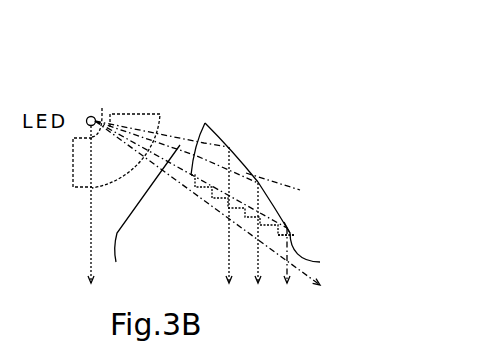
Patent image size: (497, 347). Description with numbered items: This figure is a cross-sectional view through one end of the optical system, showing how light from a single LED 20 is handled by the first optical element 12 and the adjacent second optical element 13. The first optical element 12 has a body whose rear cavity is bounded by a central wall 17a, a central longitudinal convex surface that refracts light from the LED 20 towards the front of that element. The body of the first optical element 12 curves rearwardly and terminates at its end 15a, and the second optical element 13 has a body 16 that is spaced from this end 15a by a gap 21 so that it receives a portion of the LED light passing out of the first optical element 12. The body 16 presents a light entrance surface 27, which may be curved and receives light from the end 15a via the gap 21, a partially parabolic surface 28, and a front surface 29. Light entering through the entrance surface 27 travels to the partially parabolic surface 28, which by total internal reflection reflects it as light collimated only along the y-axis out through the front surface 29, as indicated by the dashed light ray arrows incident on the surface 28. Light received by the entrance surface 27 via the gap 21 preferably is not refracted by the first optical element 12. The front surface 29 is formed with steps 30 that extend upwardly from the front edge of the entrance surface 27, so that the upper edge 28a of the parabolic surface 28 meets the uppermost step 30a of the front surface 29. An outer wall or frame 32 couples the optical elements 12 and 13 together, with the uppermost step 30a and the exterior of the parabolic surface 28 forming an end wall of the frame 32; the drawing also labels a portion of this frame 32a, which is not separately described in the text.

The first optical element 12 is at (83, 165).
The LED 20 is at (92, 116).
The central wall 17a is at (102, 108).
The end of body 15a is at (162, 114).
The gap 21 is at (145, 213).
The second optical element 13 is at (281, 170).
The light entrance surface 27 is at (203, 123).
The outer wall or frame 32 is at (220, 130).
The lower end of exit surface 32a is at (290, 226).
The partially parabolic surface 28 is at (258, 183).
The upper edge of surface 28a is at (295, 236).
The front surface 29 is at (191, 180).
The steps 30 is at (220, 212).
The uppermost step 30a is at (320, 262).
The body 16 is at (267, 205).